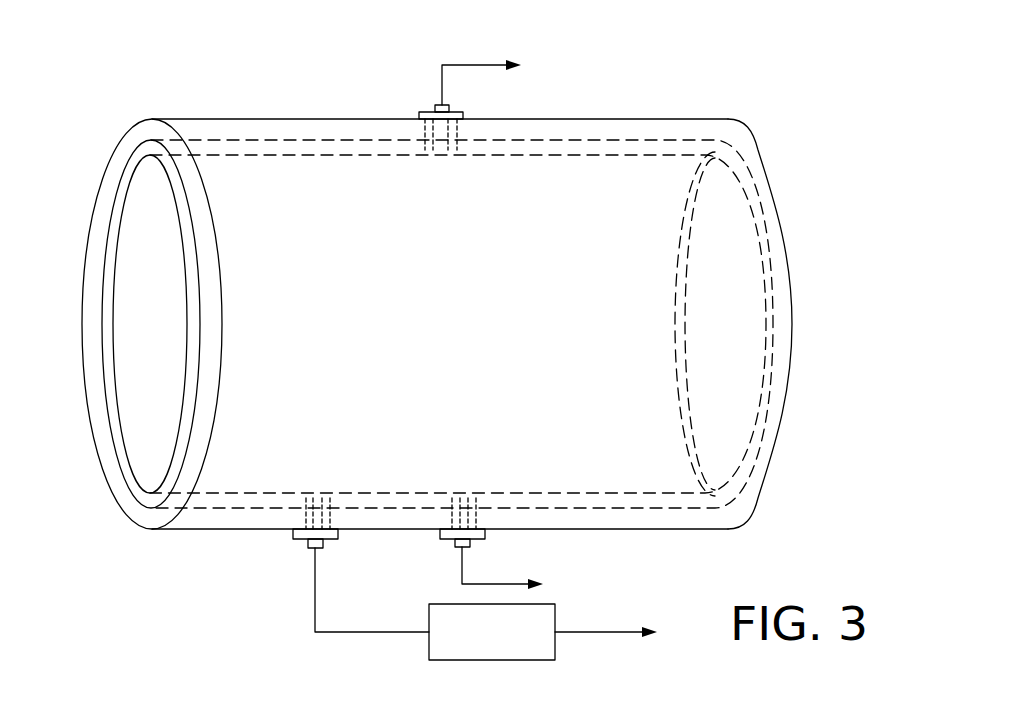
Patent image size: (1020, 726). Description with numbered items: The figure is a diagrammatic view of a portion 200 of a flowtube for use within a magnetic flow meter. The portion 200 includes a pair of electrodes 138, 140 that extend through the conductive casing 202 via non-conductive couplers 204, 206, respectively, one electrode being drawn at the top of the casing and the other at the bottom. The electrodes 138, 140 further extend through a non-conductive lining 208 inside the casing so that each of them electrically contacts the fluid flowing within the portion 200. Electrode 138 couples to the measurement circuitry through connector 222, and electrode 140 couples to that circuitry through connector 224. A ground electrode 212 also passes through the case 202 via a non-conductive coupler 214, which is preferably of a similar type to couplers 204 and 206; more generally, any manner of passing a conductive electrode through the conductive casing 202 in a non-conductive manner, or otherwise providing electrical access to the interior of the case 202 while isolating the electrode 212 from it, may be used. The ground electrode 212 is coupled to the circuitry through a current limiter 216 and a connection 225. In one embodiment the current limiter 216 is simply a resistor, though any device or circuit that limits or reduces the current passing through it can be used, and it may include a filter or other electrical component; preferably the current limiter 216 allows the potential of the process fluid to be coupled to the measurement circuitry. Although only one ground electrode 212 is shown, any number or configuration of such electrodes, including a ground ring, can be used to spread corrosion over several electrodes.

The portion of flowtube 200 is at (698, 118).
The conductive casing 202 is at (578, 118).
The non-conductive coupler 204 is at (457, 136).
The non-conductive coupler 206 is at (445, 514).
The non-conductive lining 208 is at (132, 481).
The electrode 138 is at (425, 110).
The electrode 140 is at (474, 542).
The ground electrode 212 is at (309, 547).
The non-conductive coupler 214 is at (301, 514).
The current limiter 216 is at (496, 661).
The connector 222 is at (468, 64).
The connector 224 is at (498, 583).
The connection 225 is at (588, 633).